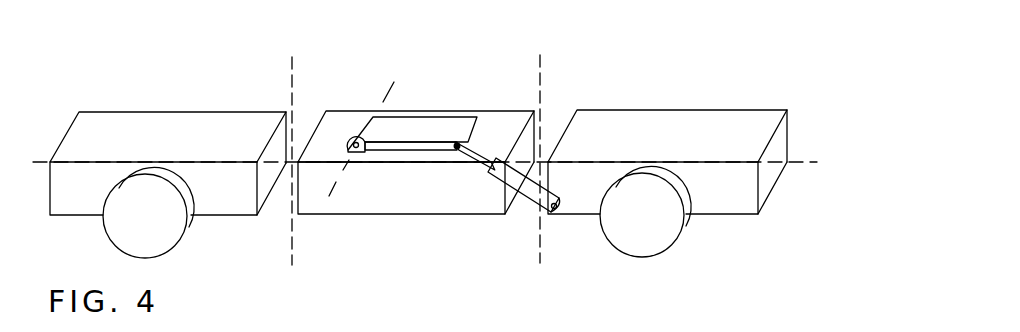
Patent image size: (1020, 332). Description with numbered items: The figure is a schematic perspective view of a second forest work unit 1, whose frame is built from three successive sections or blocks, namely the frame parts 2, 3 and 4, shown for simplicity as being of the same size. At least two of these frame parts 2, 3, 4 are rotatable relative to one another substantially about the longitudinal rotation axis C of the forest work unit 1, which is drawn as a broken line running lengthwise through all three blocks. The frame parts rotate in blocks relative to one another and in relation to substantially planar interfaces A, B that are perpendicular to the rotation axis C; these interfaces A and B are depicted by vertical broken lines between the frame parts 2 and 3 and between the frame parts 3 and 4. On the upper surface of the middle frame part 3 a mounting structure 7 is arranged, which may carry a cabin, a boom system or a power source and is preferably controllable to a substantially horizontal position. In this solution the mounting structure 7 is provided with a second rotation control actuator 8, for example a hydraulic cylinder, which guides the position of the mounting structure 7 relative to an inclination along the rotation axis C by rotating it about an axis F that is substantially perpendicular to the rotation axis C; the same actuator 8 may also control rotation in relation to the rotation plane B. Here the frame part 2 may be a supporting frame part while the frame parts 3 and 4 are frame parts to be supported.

The forest work unit 1 is at (418, 142).
The frame part 2 is at (147, 128).
The frame part 3 is at (497, 125).
The frame part 4 is at (667, 123).
The mounting structure 7 is at (413, 130).
The second rotation control actuator 8 is at (533, 190).
The axis F is at (372, 126).
The interface A is at (292, 147).
The interface B is at (542, 146).
The rotation axis C is at (444, 163).